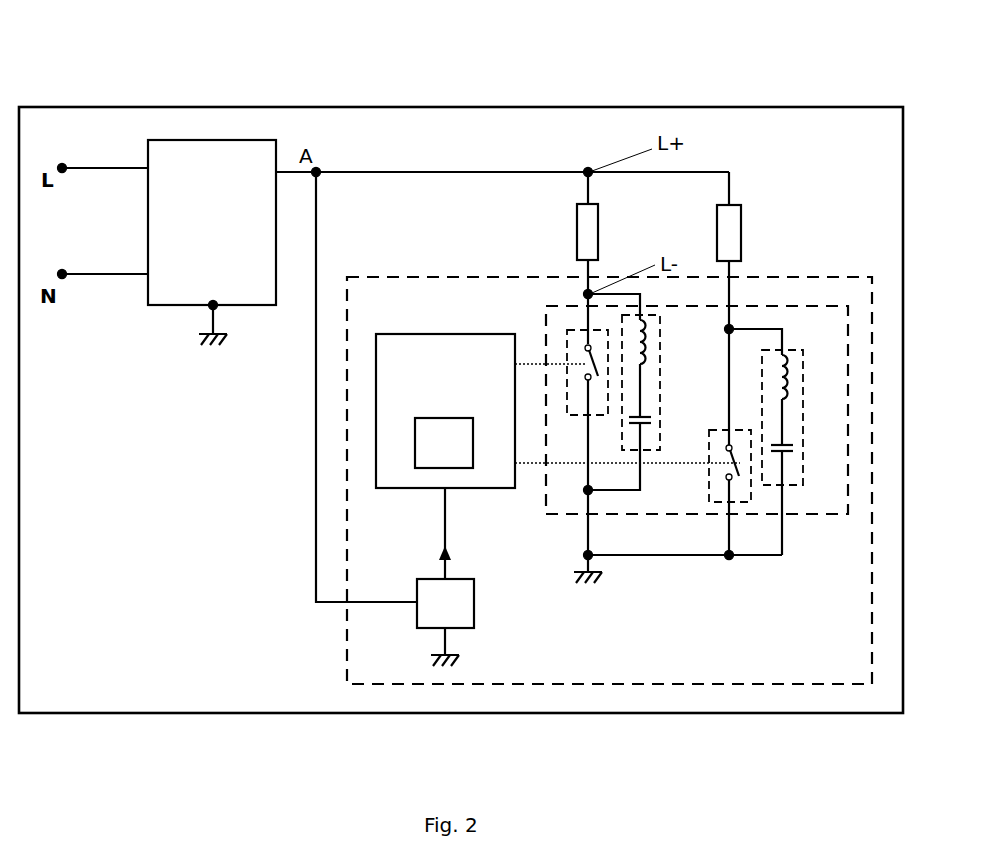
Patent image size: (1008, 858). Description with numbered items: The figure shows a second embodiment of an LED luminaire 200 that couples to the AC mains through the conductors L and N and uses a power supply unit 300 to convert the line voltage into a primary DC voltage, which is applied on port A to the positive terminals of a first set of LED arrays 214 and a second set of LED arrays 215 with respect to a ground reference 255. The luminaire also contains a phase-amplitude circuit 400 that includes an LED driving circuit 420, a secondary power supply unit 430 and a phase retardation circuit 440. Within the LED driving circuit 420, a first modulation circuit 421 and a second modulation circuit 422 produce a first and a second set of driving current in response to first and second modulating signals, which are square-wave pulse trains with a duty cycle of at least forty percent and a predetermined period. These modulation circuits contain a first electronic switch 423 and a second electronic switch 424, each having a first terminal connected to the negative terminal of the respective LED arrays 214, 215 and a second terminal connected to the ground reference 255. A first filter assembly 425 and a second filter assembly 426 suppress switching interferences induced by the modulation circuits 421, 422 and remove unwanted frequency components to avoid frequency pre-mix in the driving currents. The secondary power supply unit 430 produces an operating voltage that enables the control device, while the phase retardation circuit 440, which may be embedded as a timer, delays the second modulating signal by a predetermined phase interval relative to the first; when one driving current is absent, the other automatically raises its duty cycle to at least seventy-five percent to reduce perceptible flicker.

The LED luminaire 200 is at (116, 98).
The power supply unit 300 is at (223, 130).
The ground reference 255 is at (196, 343).
The first set of LED arrays 214 is at (573, 214).
The second set of LED arrays 215 is at (742, 205).
The phase-amplitude circuit 400 is at (458, 268).
The LED driving circuit 420 is at (366, 394).
The first modulation circuit 421 is at (558, 320).
The second modulation circuit 422 is at (713, 420).
The first electronic switch 423 is at (586, 362).
The second electronic switch 424 is at (727, 480).
The first filter assembly 425 is at (663, 458).
The second filter assembly 426 is at (806, 475).
The secondary power supply unit 430 is at (484, 614).
The phase retardation circuit 440 is at (415, 448).